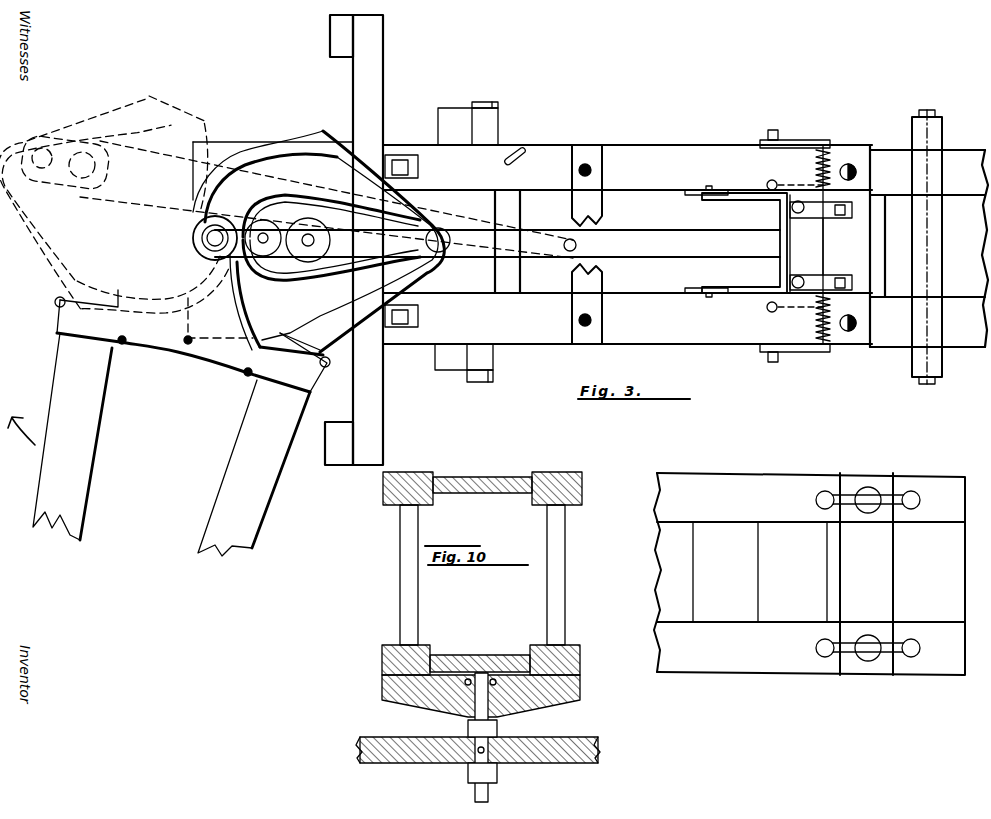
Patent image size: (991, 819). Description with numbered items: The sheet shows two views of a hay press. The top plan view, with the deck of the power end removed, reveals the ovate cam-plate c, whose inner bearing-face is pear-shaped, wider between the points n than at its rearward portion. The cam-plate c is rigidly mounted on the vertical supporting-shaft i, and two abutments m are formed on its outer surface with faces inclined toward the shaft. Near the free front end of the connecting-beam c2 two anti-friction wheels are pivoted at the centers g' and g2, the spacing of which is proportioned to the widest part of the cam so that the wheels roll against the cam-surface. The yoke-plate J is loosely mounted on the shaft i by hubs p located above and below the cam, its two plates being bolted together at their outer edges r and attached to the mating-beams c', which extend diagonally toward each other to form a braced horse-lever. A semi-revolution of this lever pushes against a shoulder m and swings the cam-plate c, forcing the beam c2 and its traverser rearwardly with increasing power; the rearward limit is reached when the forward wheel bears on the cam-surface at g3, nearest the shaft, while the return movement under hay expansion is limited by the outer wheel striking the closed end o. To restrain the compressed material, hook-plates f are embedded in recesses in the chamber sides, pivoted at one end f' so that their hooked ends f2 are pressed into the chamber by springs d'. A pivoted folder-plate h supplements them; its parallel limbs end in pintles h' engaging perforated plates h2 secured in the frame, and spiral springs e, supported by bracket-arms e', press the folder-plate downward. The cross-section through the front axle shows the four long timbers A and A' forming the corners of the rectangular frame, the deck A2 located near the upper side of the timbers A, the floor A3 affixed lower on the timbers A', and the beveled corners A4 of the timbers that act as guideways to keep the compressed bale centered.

In FIG. 3, the cam-plate c is at (318, 241).
In FIG. 3, the mating-beams c' is at (171, 444).
In FIG. 3, the connecting-beam c2 is at (497, 243).
In FIG. 3, the abutments m is at (357, 355).
In FIG. 3, the points of widest cam diameter n is at (340, 241).
In FIG. 3, the closed end of the cam-plate o is at (443, 254).
In FIG. 3, the pivot center of wheel g' is at (269, 234).
In FIG. 3, the pivot center of wheel g2 is at (312, 244).
In FIG. 3, the cam-surface point nearest the pivot-shaft g3 is at (189, 305).
In FIG. 3, the vertical supporting-shaft i is at (205, 238).
In FIG. 3, the hubs p is at (193, 246).
In FIG. 3, the outer edges of yoke-plates r is at (182, 341).
In FIG. 3, the yoke-plate J is at (302, 362).
In FIG. 3, the folder-plate h is at (744, 243).
In FIG. 3, the pintles h' is at (712, 247).
In FIG. 3, the perforated plates h2 is at (690, 190).
In FIG. 3, the spiral springs e is at (800, 243).
In FIG. 3, the bracket-arms e' is at (848, 267).
In FIG. 3, the hook-plates f is at (839, 249).
In FIG. 3, the pivot end of hook-plate f' is at (787, 250).
In FIG. 3, the hooked ends f2 is at (852, 213).
In FIG. 3, the long timbers a is at (802, 249).
In FIG. 3, the springs d' is at (830, 259).
In FIG. 10, the long timbers A is at (482, 477).
In FIG. 10, the lower longitudinal timbers A' is at (480, 660).
In FIG. 10, the deck A2 is at (470, 478).
In FIG. 10, the floor A3 is at (470, 660).
In FIG. 10, the beveled corners A4 is at (425, 505).